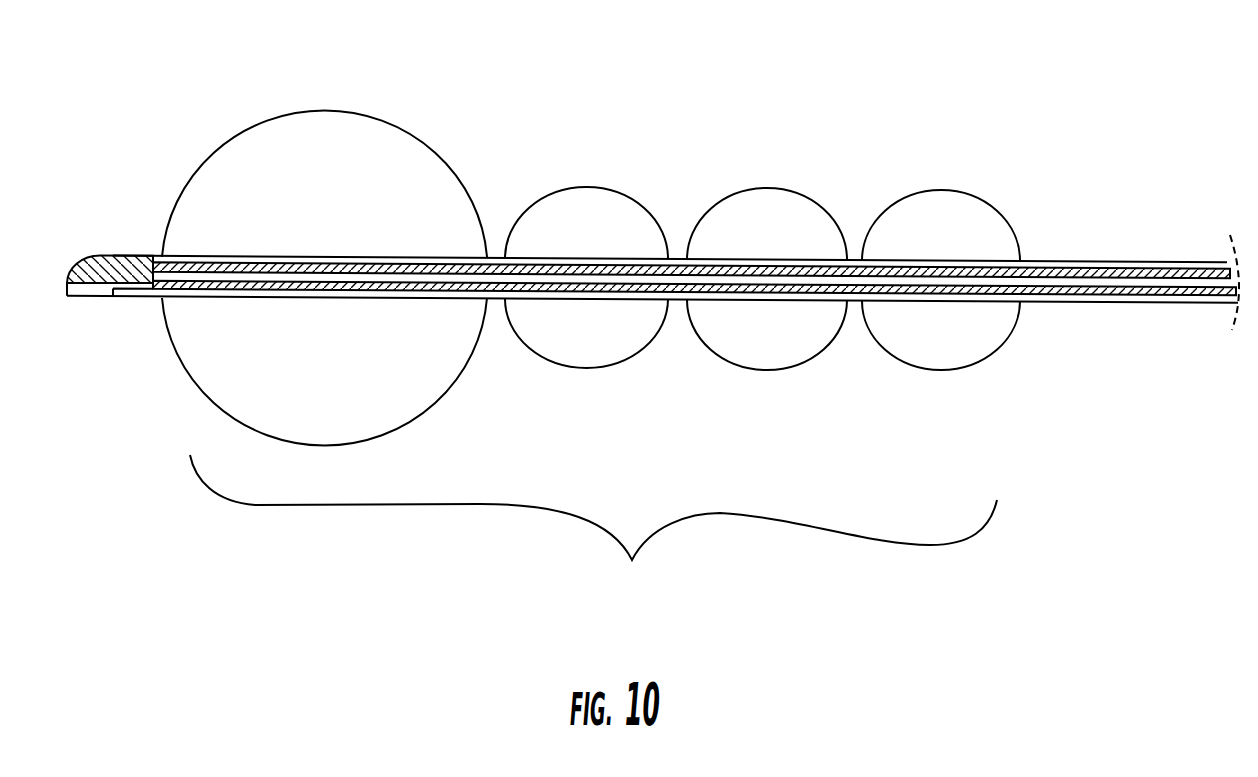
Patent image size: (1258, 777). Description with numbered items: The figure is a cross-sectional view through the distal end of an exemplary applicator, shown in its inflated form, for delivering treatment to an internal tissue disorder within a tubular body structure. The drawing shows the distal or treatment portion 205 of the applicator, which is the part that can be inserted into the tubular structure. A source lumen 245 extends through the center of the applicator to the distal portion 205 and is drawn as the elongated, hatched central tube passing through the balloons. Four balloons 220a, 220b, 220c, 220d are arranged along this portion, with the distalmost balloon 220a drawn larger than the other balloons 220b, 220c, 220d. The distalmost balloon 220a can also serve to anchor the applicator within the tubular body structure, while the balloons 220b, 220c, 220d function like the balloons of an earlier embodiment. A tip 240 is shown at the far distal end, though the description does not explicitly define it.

The distal or treatment portion 205 is at (593, 529).
The distalmost balloon 220a is at (332, 132).
The balloon 220b is at (580, 218).
The balloon 220c is at (763, 343).
The balloon 220d is at (920, 347).
The distal tip 240 is at (109, 258).
The source lumen 245 is at (470, 278).